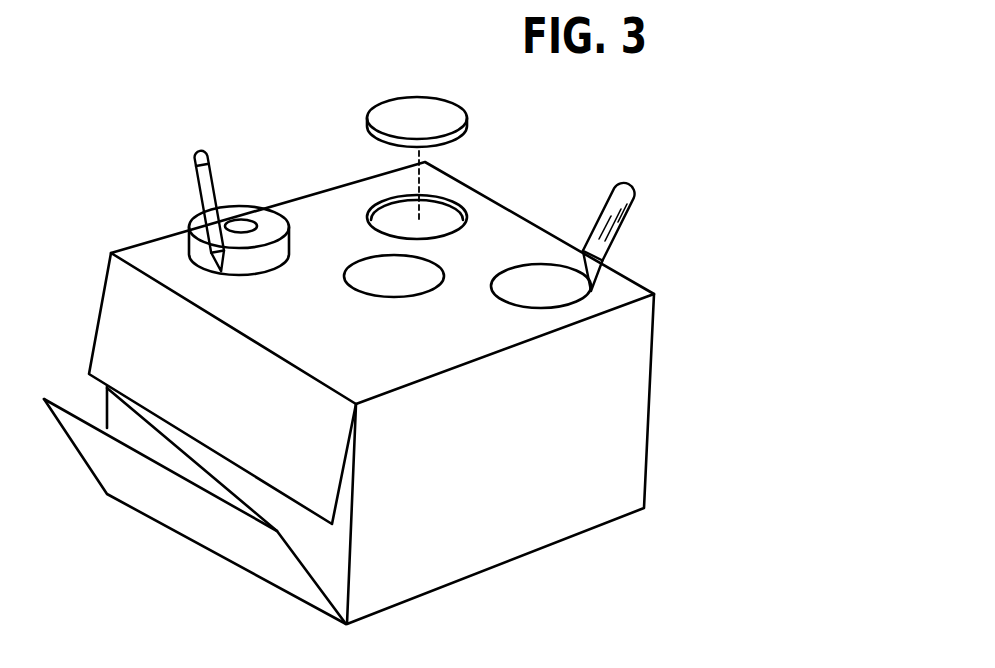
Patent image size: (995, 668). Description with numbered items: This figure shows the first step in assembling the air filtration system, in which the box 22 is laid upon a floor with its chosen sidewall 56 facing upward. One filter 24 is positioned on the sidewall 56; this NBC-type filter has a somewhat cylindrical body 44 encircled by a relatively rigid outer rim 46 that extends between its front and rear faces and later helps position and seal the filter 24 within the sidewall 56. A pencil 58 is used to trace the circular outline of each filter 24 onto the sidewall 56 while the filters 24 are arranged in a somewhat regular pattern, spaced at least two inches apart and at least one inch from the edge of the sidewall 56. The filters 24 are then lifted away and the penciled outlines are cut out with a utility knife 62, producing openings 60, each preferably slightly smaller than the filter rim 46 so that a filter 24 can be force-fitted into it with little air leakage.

The box 22 is at (652, 427).
The filter 24 is at (274, 175).
The body 44 is at (291, 225).
The outer rim 46 is at (280, 256).
The sidewall 56 is at (625, 288).
The pencil 58 is at (198, 184).
The opening 60 is at (463, 206).
The utility knife 62 is at (637, 195).